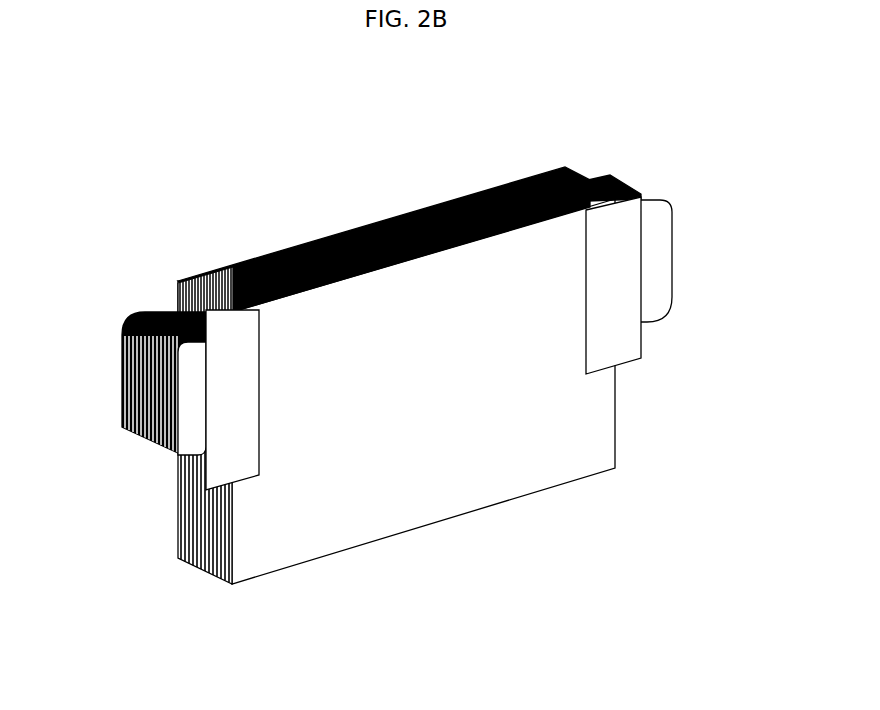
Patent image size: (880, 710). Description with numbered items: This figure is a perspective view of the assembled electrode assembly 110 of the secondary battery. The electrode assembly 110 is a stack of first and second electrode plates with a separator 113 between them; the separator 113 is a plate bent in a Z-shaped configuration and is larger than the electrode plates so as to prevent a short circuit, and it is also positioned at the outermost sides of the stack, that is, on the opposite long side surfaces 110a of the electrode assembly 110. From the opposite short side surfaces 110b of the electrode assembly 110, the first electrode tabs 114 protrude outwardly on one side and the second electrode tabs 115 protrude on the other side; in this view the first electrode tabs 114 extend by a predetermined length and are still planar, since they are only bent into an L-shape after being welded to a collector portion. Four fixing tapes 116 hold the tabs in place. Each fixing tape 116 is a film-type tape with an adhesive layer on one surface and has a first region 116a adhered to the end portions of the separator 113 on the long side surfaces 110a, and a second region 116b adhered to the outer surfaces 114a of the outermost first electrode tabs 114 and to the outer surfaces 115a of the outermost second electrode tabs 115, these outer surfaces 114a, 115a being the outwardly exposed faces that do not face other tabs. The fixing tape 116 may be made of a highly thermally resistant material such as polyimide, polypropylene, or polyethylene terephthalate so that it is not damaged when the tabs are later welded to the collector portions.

The electrode assembly 110 is at (441, 396).
The long side surfaces 110a is at (420, 293).
The short side surfaces 110b is at (200, 571).
The separator 113 is at (432, 505).
The first electrode tabs 114 is at (125, 430).
The outer surfaces of the first electrode tabs 114a is at (167, 455).
The second electrode tabs 115 is at (701, 232).
The outer surfaces of the second electrode tabs 115a is at (664, 259).
The fixing tape 116 is at (385, 281).
The first region 116a is at (218, 362).
The second region 116b is at (207, 278).